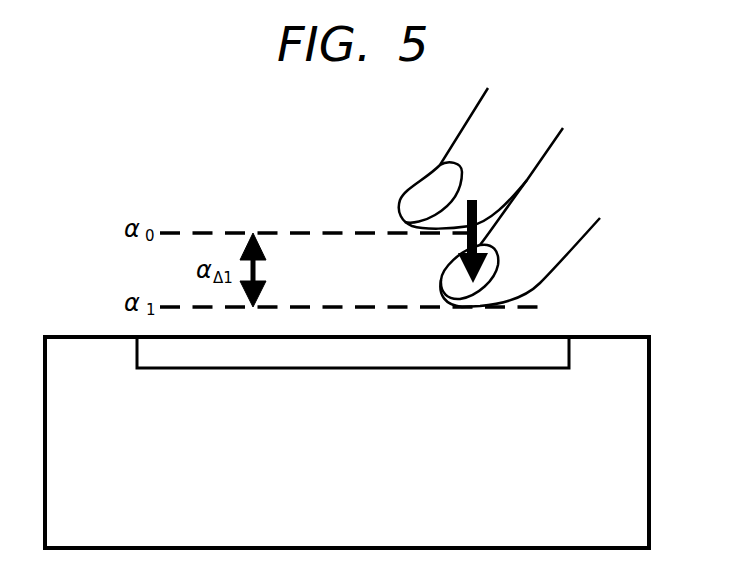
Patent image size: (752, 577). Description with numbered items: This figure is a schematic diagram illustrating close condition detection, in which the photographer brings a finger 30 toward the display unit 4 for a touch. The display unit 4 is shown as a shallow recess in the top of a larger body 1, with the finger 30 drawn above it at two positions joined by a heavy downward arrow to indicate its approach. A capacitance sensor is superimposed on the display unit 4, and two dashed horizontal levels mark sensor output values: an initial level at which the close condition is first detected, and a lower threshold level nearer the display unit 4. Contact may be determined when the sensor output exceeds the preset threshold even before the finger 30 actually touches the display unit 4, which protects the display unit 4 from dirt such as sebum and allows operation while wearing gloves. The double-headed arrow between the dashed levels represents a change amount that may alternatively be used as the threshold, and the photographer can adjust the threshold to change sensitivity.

The base body / housing 1 is at (630, 445).
The display unit 4 is at (547, 350).
The finger 30 is at (476, 138).